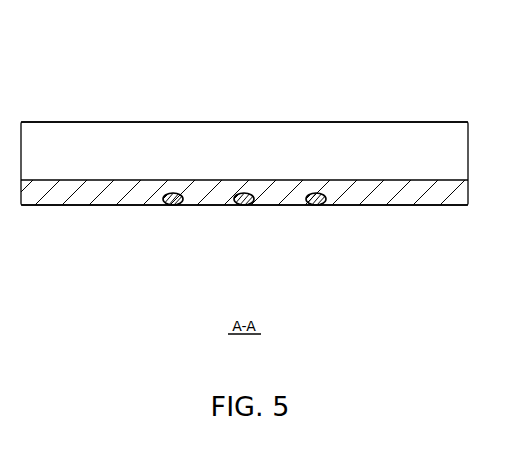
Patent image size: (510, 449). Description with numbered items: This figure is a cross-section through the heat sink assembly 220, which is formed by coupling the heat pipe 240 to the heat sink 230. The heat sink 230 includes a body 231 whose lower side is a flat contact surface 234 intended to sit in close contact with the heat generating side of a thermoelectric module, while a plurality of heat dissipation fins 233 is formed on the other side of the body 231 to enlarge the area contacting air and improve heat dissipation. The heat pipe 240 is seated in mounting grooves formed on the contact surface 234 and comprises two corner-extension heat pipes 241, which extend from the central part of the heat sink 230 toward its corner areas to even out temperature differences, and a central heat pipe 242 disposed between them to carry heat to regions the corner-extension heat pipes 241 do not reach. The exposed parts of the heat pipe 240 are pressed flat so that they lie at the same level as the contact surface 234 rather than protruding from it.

The heat sink assembly 220 is at (94, 33).
The heat sink 230 is at (276, 104).
The heat dissipation fins 233 is at (358, 121).
The body 231 is at (107, 207).
The contact surface 234 is at (390, 207).
The heat pipe 240 is at (244, 239).
The corner-extension heat pipe 241 is at (174, 208).
The central heat pipe 242 is at (244, 223).